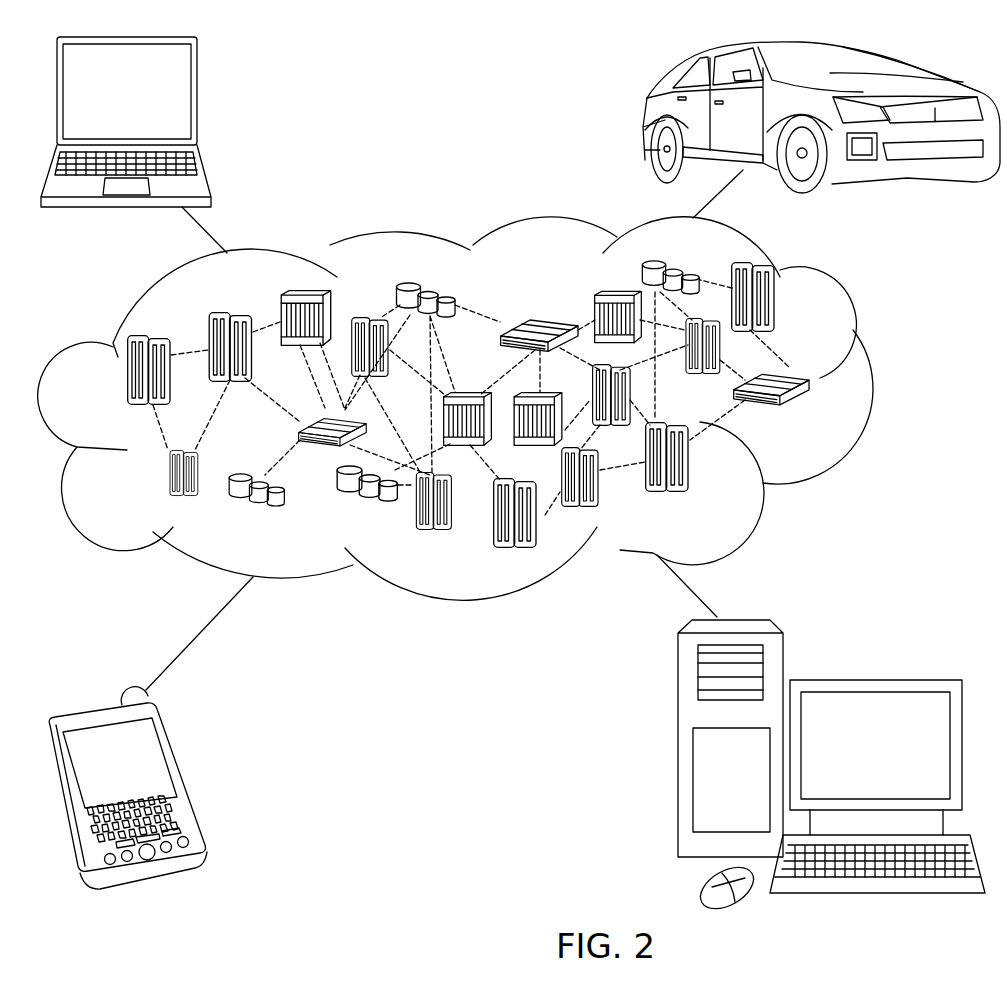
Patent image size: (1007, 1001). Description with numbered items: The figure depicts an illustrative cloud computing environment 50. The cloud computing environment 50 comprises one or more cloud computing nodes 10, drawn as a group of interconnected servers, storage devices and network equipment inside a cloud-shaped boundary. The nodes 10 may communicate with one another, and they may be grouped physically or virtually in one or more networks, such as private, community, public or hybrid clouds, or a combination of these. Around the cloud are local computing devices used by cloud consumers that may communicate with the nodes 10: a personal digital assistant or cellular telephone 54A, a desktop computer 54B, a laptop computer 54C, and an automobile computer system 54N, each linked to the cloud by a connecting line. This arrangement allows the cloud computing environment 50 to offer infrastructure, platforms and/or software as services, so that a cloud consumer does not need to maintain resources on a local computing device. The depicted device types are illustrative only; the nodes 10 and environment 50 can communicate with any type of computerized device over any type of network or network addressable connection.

The cloud computing node 10 is at (813, 413).
The cloud computing environment 50 is at (876, 383).
The personal digital assistant or cellular telephone 54A is at (186, 775).
The desktop computer 54B is at (870, 680).
The laptop computer 54C is at (198, 102).
The automobile computer system 54N is at (648, 116).